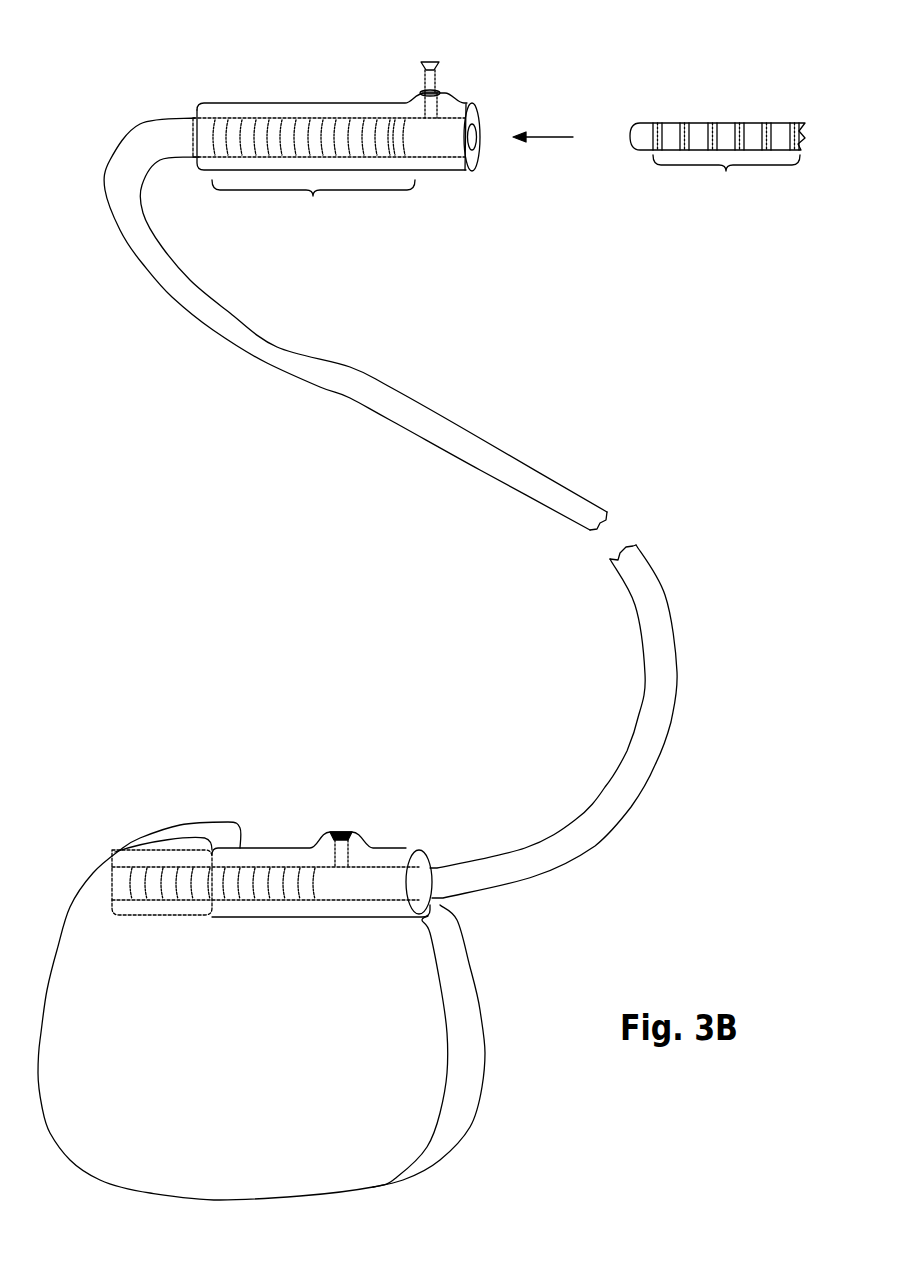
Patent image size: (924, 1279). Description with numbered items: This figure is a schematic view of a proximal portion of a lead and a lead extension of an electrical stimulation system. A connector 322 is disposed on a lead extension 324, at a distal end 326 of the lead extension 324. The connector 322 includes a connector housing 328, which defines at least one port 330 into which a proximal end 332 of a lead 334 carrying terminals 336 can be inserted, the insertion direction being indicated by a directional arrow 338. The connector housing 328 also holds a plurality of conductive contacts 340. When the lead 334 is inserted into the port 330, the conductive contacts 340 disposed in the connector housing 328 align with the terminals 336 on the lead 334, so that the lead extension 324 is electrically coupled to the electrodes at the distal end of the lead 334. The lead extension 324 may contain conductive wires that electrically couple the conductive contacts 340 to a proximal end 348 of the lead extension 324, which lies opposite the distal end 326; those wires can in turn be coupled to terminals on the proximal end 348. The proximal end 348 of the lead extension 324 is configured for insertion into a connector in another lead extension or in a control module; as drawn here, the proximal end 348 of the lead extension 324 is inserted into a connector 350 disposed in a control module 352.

The connector 322 is at (296, 102).
The lead extension 324 is at (418, 387).
The distal end 326 is at (342, 114).
The connector housing 328 is at (242, 115).
The port 330 is at (488, 153).
The proximal end 332 is at (717, 100).
The lead 334 is at (720, 122).
The terminals 336 is at (726, 175).
The directional arrow 338 is at (552, 136).
The conductive contacts 340 is at (313, 203).
The proximal end 348 is at (302, 835).
The connector 350 is at (268, 848).
The control module 352 is at (265, 966).